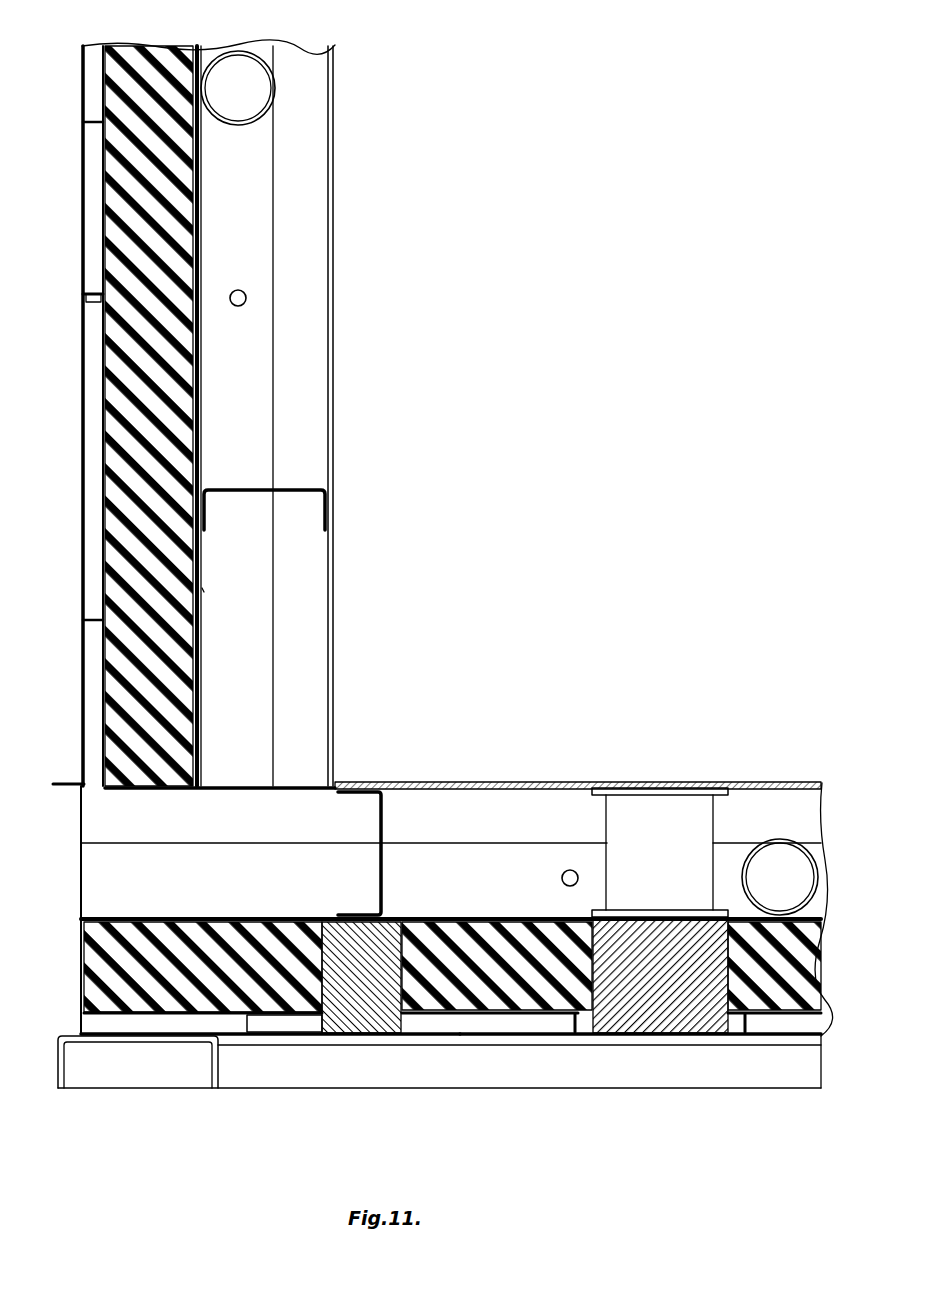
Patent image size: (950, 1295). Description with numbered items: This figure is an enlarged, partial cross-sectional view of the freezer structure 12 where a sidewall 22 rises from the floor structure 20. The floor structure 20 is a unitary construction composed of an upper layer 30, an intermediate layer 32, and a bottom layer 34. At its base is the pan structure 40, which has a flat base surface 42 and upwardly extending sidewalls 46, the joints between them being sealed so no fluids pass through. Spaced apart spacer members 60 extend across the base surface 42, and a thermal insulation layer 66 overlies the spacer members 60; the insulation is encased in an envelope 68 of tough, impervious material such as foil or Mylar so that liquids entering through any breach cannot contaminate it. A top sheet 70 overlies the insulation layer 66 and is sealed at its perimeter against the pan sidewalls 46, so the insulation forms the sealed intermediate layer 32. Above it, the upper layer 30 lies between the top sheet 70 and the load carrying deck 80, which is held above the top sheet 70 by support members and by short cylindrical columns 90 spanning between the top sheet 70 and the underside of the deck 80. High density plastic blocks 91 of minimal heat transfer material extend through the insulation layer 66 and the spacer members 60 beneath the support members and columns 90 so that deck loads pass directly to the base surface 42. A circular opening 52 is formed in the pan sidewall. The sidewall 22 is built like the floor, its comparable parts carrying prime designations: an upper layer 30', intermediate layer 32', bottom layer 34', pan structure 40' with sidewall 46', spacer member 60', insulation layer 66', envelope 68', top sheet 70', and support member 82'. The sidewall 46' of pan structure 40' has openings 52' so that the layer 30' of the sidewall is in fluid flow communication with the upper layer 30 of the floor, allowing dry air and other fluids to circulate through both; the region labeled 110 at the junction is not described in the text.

The freezer structure 12 is at (407, 188).
The floor structure 20 is at (60, 1005).
The sidewall 22 is at (338, 378).
The upper layer 30 is at (840, 909).
The upper layer of sidewall 30' is at (305, 416).
The intermediate layer 32 is at (473, 964).
The intermediate layer of sidewall 32' is at (117, 416).
The bottom layer 34 is at (662, 1040).
The bottom layer of sidewall 34' is at (66, 416).
The pan structure 40 is at (170, 967).
The pan structure of sidewall 40' is at (257, 787).
The base surface 42 is at (312, 1035).
The sidewall of pan structure 46 is at (50, 910).
The sidewall of sidewall pan structure 46' is at (83, 799).
The opening 52 is at (780, 827).
The opening in sidewall pan 52' is at (255, 64).
The spacer member 60 is at (263, 1067).
The spacer member of sidewall 60' is at (66, 288).
The thermal insulation layer 66 is at (497, 1020).
The thermal insulation layer of sidewall 66' is at (111, 416).
The envelope 68 is at (452, 1065).
The envelope of sidewall 68' is at (66, 416).
The top sheet 70 is at (438, 824).
The top sheet of sidewall 70' is at (300, 591).
The load carrying deck 80 is at (563, 783).
The support member of sidewall 82' is at (300, 478).
The column 90 is at (713, 812).
The block 91 is at (362, 1034).
The gap / interface 110 is at (218, 790).